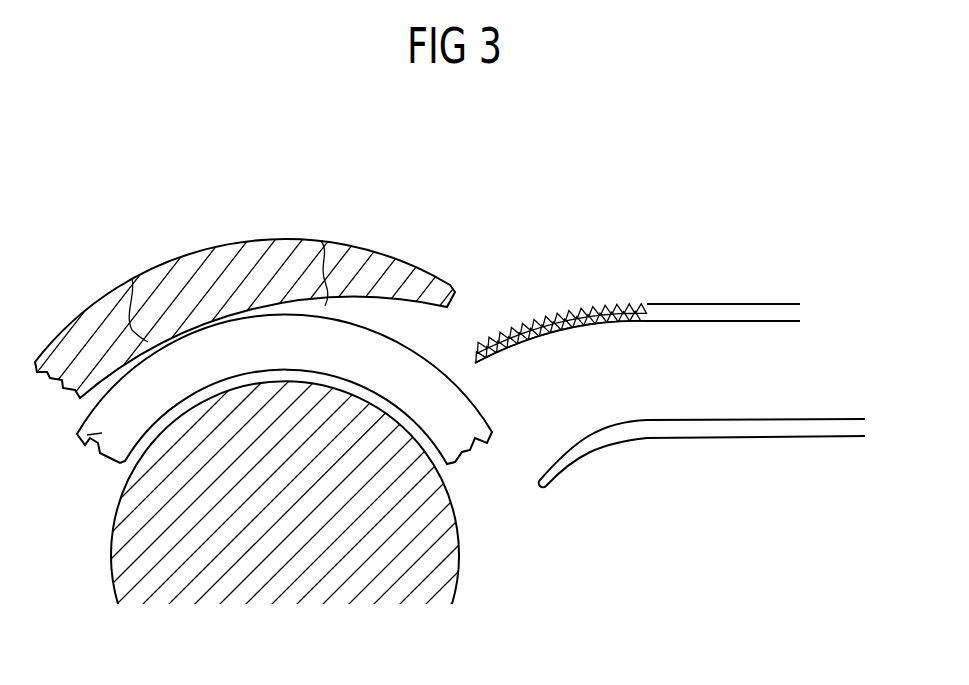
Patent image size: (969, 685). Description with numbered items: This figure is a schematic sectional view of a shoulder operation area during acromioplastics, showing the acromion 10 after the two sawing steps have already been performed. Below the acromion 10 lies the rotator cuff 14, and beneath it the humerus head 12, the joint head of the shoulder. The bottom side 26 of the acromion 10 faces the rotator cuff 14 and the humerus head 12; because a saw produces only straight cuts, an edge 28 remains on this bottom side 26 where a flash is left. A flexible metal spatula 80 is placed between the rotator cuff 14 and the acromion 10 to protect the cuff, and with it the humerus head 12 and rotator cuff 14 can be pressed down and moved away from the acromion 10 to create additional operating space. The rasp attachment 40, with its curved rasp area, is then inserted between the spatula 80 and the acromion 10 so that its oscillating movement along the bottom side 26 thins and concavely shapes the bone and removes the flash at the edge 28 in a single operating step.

The acromion 10 is at (272, 255).
The humerus head 12 is at (128, 585).
The rotator cuff 14 is at (85, 436).
The bottom side 26 is at (132, 278).
The edge 28 is at (322, 240).
The rasp attachment 40 is at (577, 299).
The spatula 80 is at (808, 418).